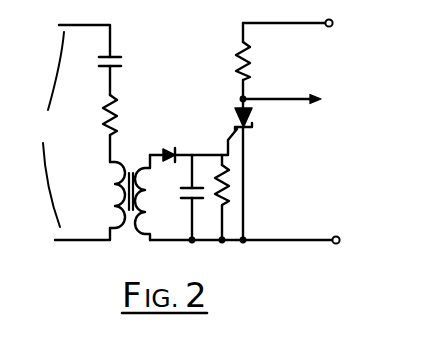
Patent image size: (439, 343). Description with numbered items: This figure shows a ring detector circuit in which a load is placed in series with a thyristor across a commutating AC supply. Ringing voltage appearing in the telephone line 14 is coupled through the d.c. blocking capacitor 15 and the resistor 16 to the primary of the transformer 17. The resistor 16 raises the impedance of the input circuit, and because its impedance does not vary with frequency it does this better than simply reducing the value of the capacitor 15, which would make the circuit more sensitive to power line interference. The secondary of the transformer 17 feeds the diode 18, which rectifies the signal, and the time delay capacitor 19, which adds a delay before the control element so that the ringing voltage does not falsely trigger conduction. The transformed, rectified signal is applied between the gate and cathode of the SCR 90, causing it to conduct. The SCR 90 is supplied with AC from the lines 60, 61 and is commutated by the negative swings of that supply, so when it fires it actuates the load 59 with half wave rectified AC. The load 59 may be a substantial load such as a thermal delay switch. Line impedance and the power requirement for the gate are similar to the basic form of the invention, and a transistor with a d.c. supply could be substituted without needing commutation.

The telephone line 14 is at (49, 129).
The d.c. blocking capacitor 15 is at (122, 75).
The resistor 16 is at (120, 107).
The transformer 17 is at (108, 200).
The diode 18 is at (176, 140).
The time delay capacitor 19 is at (203, 173).
The load 59 is at (270, 75).
The AC supply line 60 is at (328, 35).
The AC supply line 61 is at (333, 227).
The SCR 90 is at (255, 119).